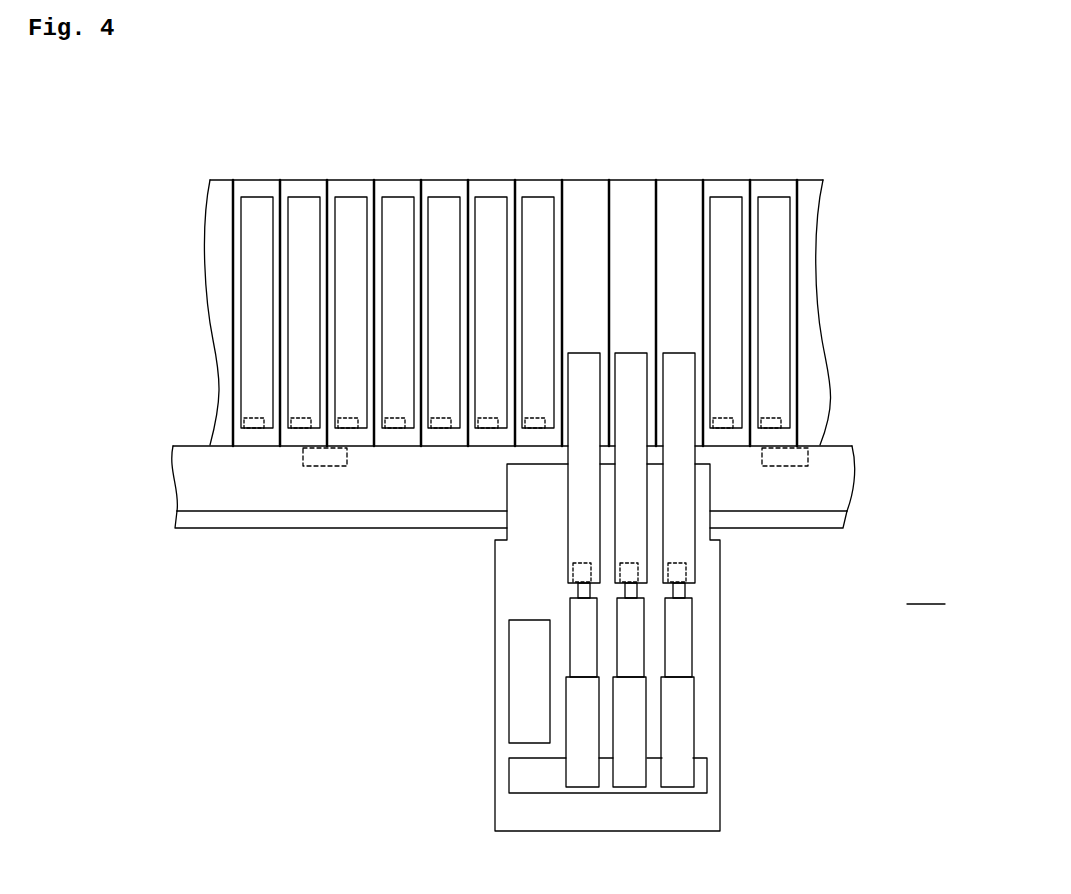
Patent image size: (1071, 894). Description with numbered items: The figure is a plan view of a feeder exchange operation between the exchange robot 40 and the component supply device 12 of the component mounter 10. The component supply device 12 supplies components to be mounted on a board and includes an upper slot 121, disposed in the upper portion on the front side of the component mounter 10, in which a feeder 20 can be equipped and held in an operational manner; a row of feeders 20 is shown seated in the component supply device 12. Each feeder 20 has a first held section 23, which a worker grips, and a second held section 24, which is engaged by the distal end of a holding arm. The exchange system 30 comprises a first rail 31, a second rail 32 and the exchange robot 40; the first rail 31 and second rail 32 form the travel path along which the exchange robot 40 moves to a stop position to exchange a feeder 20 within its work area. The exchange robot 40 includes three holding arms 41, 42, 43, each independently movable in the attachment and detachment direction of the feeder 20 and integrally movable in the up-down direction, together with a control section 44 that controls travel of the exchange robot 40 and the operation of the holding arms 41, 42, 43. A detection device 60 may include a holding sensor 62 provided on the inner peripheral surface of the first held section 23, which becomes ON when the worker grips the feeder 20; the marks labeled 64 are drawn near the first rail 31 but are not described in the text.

The component mounter 10 is at (175, 110).
The component supply device 12 is at (293, 166).
The upper slot 121 is at (633, 195).
The feeder 20 is at (448, 210).
The first held section 23 is at (243, 425).
The holding sensor 62 is at (532, 499).
The second held section 24 is at (575, 570).
The exchange system 30 is at (363, 668).
The first rail 31 is at (198, 485).
The second rail 32 is at (207, 520).
The exchange robot 40 is at (472, 810).
The holding arm 41 is at (580, 592).
The holding arm 42 is at (633, 592).
The holding arm 43 is at (686, 592).
The control section 44 is at (532, 675).
The detection device 60 is at (290, 483).
The fixing mark 64 is at (327, 449).